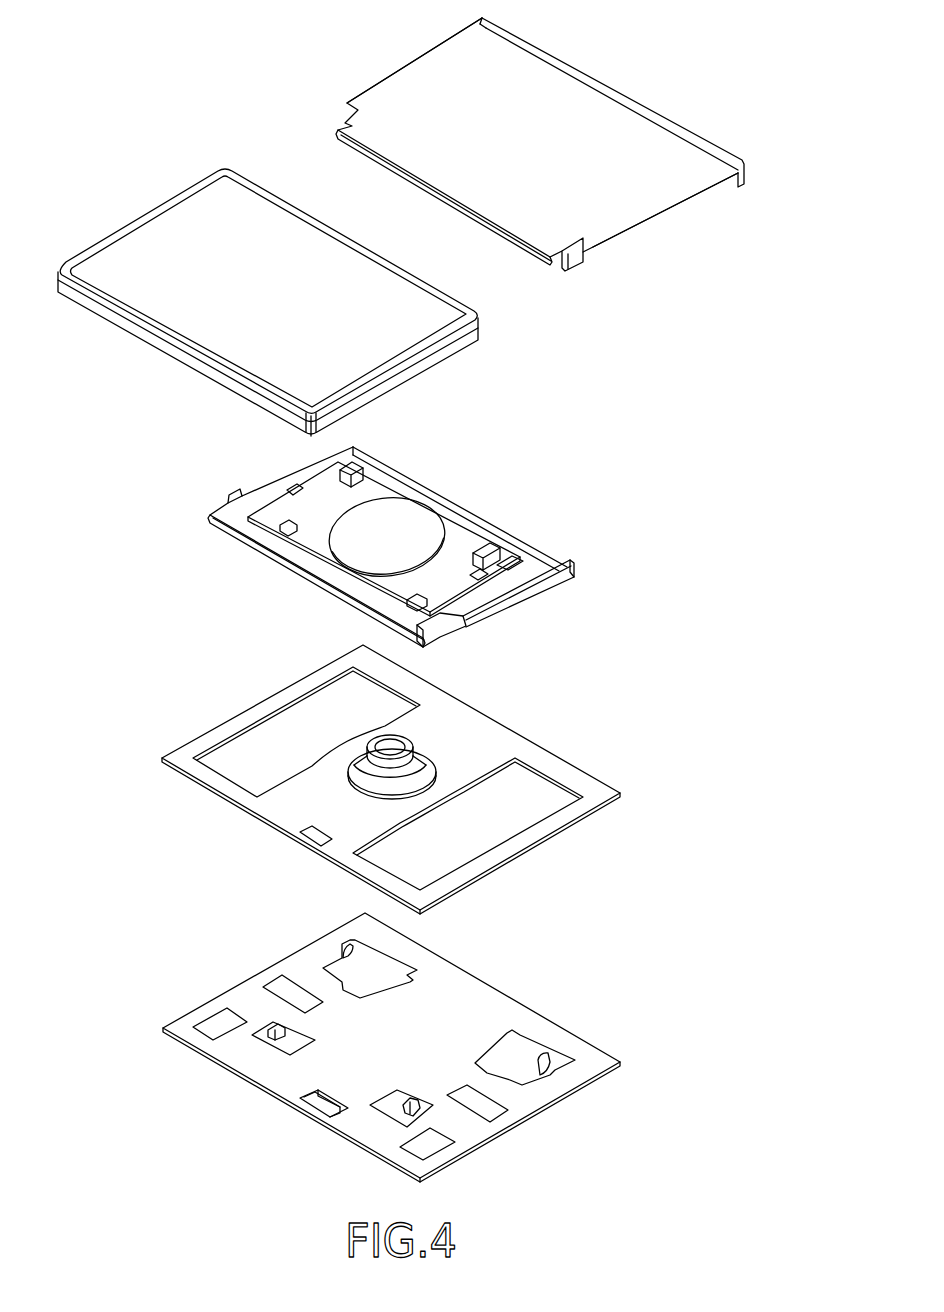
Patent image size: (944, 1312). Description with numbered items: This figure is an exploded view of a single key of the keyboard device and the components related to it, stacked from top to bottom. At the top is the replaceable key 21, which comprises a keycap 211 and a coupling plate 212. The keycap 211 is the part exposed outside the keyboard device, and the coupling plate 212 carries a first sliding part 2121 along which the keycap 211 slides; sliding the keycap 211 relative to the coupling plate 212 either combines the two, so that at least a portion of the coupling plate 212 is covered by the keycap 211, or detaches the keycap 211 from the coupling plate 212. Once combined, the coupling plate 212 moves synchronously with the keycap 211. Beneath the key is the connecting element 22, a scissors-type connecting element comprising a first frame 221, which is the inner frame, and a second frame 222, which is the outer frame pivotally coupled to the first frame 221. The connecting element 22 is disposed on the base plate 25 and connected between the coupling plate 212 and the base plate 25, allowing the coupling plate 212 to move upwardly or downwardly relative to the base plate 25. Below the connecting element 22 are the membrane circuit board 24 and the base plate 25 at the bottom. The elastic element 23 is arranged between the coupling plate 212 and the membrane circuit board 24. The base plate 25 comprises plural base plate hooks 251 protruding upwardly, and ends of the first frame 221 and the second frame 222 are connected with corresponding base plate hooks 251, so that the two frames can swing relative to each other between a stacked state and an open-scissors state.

The replaceable key 21 is at (683, 413).
The keycap 211 is at (170, 222).
The coupling plate 212 is at (518, 143).
The first sliding part 2121 is at (696, 242).
The connecting element 22 is at (683, 506).
The first frame 221 is at (463, 533).
The second frame 222 is at (272, 492).
The elastic element 23 is at (408, 767).
The membrane circuit board 24 is at (572, 773).
The base plate 25 is at (400, 1044).
The base plate hook 251 is at (350, 943).